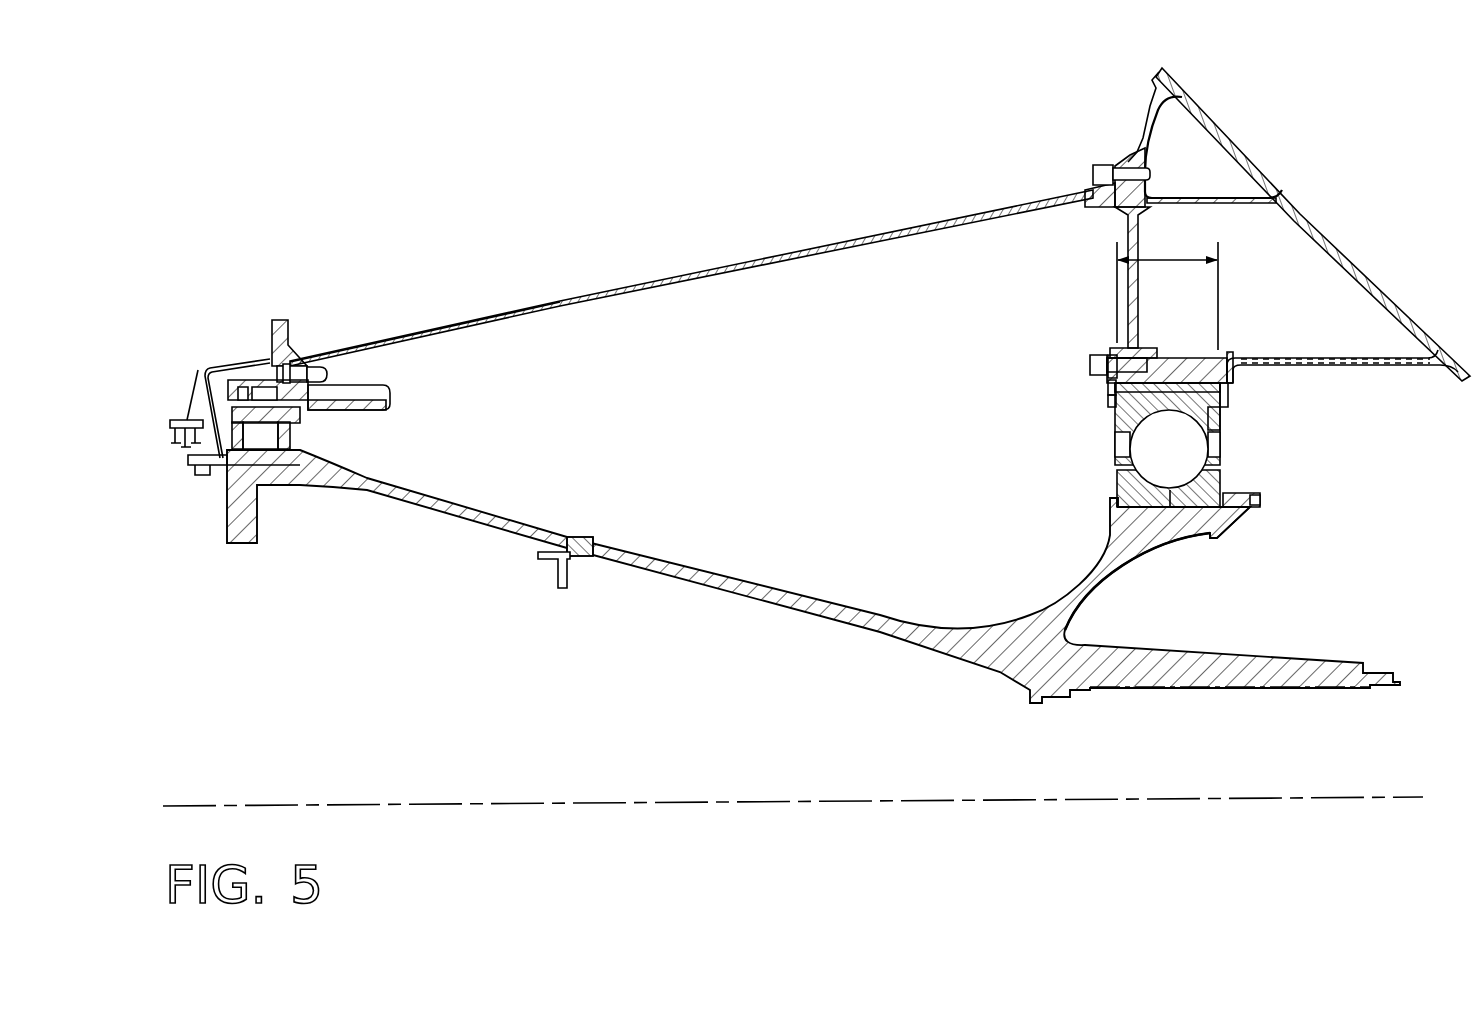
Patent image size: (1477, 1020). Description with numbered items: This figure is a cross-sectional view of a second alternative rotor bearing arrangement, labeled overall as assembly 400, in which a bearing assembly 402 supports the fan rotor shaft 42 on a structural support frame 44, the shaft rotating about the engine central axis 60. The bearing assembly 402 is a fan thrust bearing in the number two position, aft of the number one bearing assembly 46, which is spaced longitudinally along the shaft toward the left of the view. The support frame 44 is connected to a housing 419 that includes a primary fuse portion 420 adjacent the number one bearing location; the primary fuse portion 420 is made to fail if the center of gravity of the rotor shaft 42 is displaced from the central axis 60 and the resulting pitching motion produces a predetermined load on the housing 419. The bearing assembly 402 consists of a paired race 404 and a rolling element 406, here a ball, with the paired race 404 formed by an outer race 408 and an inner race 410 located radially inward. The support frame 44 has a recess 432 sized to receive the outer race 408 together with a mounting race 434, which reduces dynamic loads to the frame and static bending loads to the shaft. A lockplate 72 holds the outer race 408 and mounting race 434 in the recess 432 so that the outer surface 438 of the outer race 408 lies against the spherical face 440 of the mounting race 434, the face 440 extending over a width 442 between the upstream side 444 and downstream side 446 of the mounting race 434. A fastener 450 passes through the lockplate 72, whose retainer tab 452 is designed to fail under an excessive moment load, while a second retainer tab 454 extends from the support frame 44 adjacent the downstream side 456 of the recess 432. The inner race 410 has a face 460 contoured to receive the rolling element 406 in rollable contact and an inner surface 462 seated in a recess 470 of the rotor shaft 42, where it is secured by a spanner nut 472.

The turbine frame assembly 400 is at (819, 386).
The bearing assembly 402 is at (1099, 363).
The paired race 404 is at (1253, 437).
The rolling element 406 is at (1195, 472).
The outer race 408 is at (1225, 428).
The inner race 410 is at (1222, 478).
The housing 419 is at (768, 256).
The primary fuse portion 420 is at (443, 326).
The rotor shaft 42 is at (813, 577).
The structural support frame 44 is at (1231, 138).
The bearing assembly 46 is at (259, 344).
The recess 432 is at (1178, 372).
The mounting race 434 is at (1200, 380).
The outer surface 438 is at (1169, 449).
The face 440 is at (1221, 415).
The width 442 is at (1167, 258).
The upstream side 444 is at (1108, 385).
The downstream side 446 is at (1233, 384).
The fastener 450 is at (1090, 360).
The retainer tab 452 is at (1108, 400).
The second retainer tab 454 is at (1229, 395).
The downstream side 456 is at (1233, 357).
The face 460 is at (1117, 481).
The inner surface 462 is at (1213, 515).
The recess 470 is at (1193, 545).
The spanner nut 472 is at (1262, 503).
The lockplate 72 is at (1107, 372).
The central axis 60 is at (1247, 797).